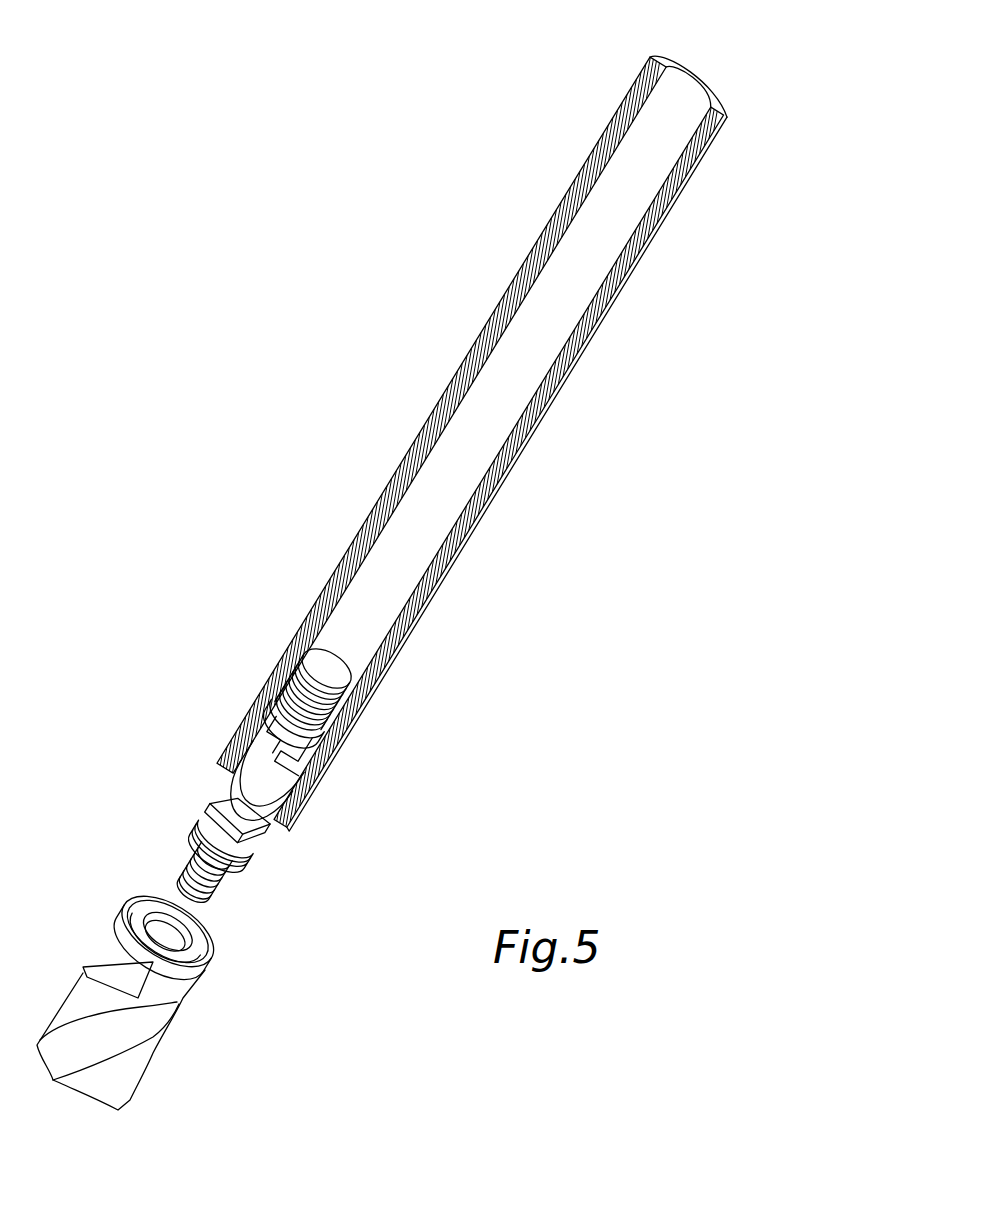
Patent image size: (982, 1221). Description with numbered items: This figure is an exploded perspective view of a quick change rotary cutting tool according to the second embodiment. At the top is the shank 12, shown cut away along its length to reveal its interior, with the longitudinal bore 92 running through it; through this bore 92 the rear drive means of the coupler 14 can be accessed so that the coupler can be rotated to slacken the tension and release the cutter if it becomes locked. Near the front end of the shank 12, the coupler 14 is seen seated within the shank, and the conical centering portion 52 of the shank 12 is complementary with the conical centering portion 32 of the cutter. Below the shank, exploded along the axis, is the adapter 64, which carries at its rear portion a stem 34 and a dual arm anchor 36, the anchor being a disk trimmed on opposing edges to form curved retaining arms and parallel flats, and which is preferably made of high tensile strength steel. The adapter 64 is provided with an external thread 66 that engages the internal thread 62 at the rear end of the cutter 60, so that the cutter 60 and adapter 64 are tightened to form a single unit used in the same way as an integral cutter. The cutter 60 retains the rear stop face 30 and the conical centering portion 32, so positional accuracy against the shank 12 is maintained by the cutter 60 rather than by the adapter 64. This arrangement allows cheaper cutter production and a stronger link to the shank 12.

The shank 12 is at (386, 490).
The longitudinal bore 92 is at (678, 97).
The coupler 14 is at (274, 700).
The conical centering portion 52 is at (222, 754).
The dual arm anchor 36 is at (257, 832).
The adapter 64 is at (193, 827).
The stem 34 is at (240, 847).
The external thread 66 is at (227, 884).
The rear stop face 30 is at (203, 966).
The conical centering portion 32 is at (140, 903).
The internal thread 62 is at (175, 913).
The cutter 60 is at (62, 1007).